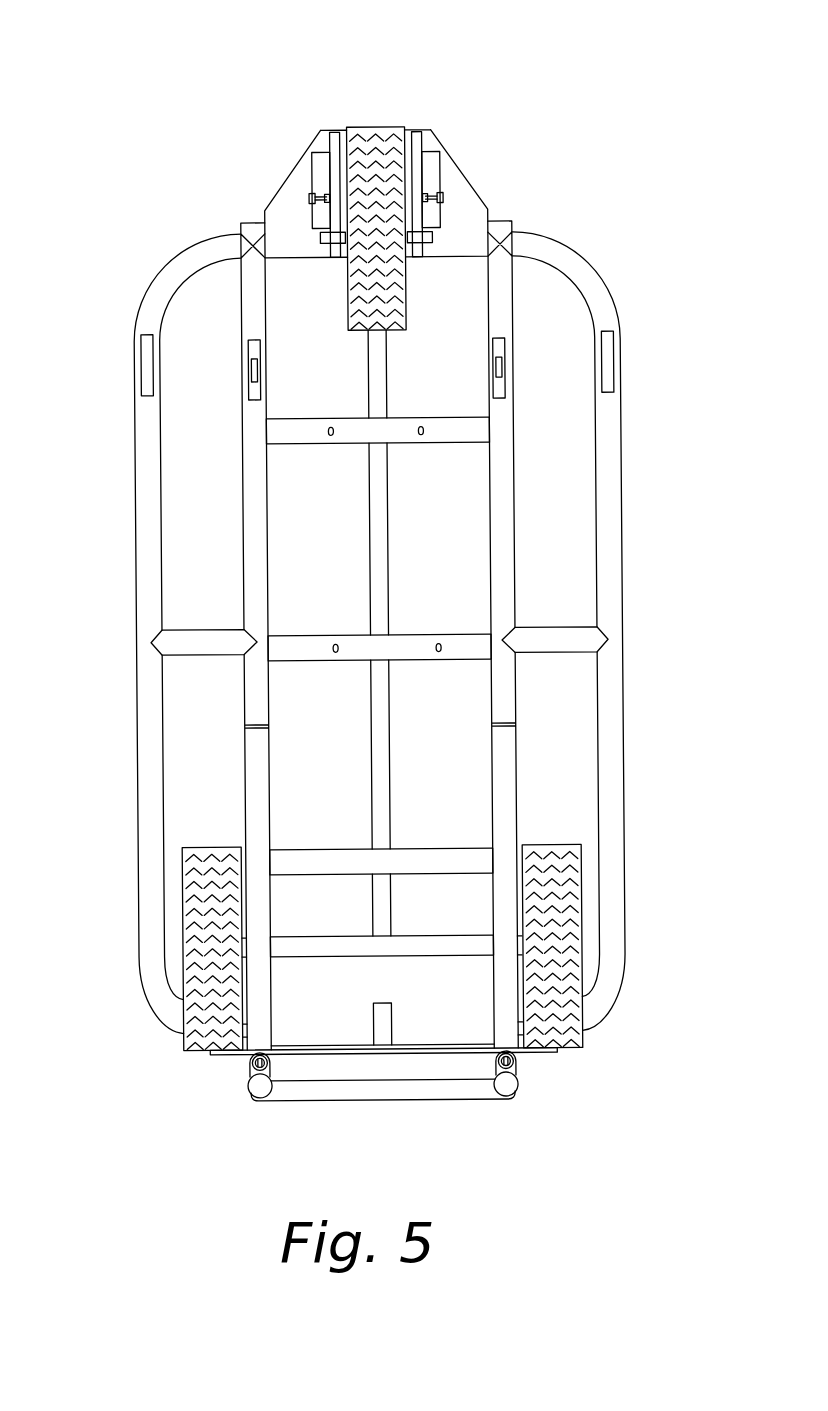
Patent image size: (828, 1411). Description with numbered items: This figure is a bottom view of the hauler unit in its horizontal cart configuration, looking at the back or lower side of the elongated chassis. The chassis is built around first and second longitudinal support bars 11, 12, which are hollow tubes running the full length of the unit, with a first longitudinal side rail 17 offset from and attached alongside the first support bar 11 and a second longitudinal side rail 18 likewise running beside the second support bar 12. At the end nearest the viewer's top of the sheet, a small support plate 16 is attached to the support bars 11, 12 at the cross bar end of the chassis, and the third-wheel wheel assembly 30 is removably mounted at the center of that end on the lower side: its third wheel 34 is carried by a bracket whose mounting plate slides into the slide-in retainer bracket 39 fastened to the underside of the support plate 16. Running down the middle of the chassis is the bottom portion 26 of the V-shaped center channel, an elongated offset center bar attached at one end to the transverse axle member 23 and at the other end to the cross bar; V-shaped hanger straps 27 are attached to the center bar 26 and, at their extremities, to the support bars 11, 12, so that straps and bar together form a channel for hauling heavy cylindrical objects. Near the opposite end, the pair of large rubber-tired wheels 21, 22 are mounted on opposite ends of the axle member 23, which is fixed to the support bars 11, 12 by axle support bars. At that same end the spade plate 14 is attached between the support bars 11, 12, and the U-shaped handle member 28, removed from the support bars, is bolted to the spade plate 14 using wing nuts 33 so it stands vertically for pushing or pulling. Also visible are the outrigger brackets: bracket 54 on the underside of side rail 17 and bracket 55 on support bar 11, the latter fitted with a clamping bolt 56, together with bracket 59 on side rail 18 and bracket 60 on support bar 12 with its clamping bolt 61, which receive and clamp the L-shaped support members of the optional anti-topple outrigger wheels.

The first longitudinal support bar 11 is at (508, 552).
The second longitudinal support bar 12 is at (247, 552).
The spade plate 14 is at (443, 1045).
The support plate 16 is at (462, 178).
The first longitudinal side rail 17 is at (614, 560).
The second longitudinal side rail 18 is at (140, 556).
The rubber-tired wheel 21 is at (545, 847).
The rubber-tired wheel 22 is at (205, 847).
The transverse axle member 23 is at (300, 936).
The bottom portion (center bar) 26 is at (375, 578).
The hanger strap 27 is at (439, 642).
The handle member 28 is at (432, 1112).
The third-wheel wheel assembly 30 is at (350, 173).
The wing nut 33 is at (513, 1091).
The third wheel 34 is at (352, 276).
The slide-in retainer bracket 39 is at (316, 170).
The bracket 54 is at (617, 358).
The bracket 55 is at (499, 342).
The clamping bolt 56 is at (499, 368).
The bracket 59 is at (144, 353).
The bracket 60 is at (251, 357).
The clamping bolt 61 is at (254, 370).